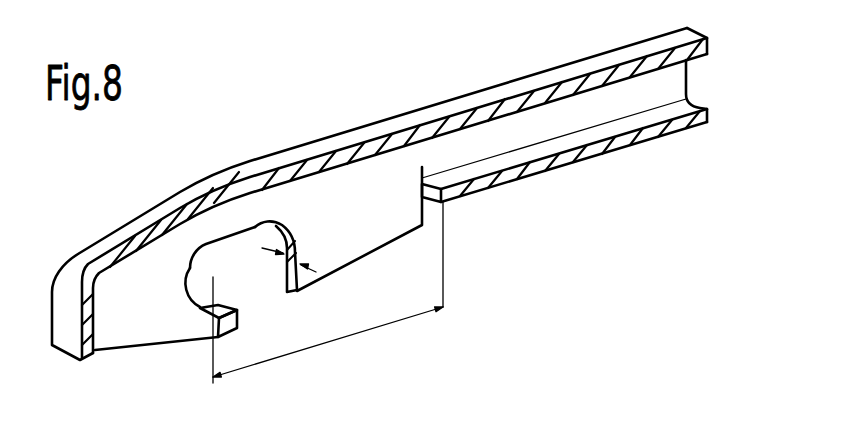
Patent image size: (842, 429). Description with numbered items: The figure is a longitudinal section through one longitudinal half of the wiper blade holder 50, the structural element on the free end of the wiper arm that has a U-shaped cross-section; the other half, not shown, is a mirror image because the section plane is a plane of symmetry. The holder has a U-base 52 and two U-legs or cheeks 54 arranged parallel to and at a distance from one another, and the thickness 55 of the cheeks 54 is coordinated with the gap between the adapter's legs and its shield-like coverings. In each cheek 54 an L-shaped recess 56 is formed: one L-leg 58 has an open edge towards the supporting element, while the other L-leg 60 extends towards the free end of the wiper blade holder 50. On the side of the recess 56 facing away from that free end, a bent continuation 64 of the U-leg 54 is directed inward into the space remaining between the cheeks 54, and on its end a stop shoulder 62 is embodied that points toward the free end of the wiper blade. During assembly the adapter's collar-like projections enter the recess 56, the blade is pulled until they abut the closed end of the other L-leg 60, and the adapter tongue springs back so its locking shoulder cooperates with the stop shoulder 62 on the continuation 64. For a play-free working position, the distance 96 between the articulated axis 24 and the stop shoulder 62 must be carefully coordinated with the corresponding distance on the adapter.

The articulated axis 24 is at (213, 277).
The wiper blade holder 50 is at (263, 149).
The U-base 52 is at (370, 128).
The U-legs or cheeks 54 is at (367, 240).
The thickness of the cheeks 55 is at (312, 249).
The recess 56 is at (246, 267).
The L-leg of the recess 58 is at (262, 292).
The other L-leg of the recess 60 is at (207, 298).
The stop shoulder 62 is at (435, 194).
The bent continuation 64 is at (568, 142).
The distance 96 is at (343, 338).